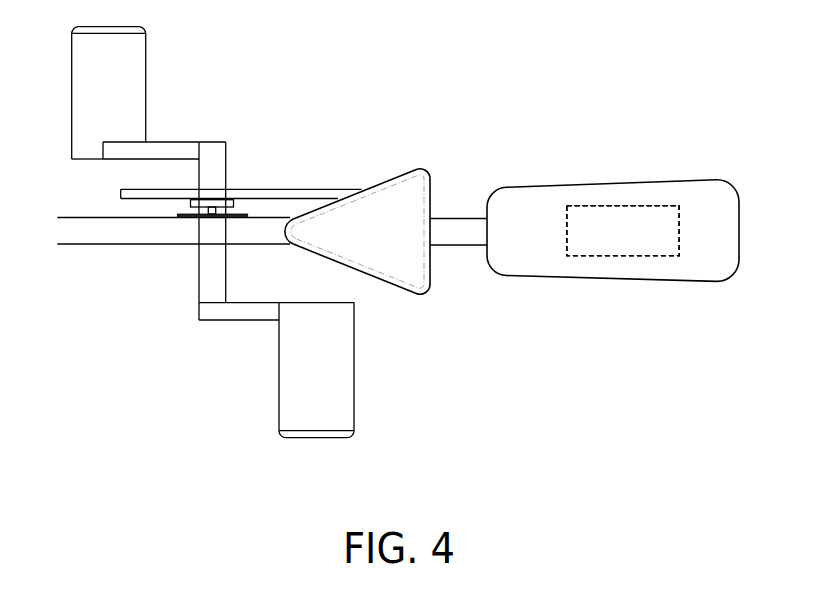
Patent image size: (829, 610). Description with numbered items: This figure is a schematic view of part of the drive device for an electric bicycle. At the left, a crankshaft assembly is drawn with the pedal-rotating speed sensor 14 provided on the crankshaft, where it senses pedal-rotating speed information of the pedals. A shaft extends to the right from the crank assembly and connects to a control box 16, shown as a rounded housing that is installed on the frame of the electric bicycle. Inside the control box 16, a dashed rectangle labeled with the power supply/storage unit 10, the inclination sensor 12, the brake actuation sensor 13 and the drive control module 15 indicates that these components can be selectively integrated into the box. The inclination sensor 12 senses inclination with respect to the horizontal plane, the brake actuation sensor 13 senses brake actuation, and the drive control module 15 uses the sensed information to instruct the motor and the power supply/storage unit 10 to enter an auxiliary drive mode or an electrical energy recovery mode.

The power supply/storage unit 10 is at (614, 215).
The inclination sensor 12 is at (623, 231).
The brake actuation sensor 13 is at (623, 231).
The pedal-rotating speed sensor 14 is at (243, 213).
The drive control module 15 is at (623, 231).
The control box 16 is at (691, 179).